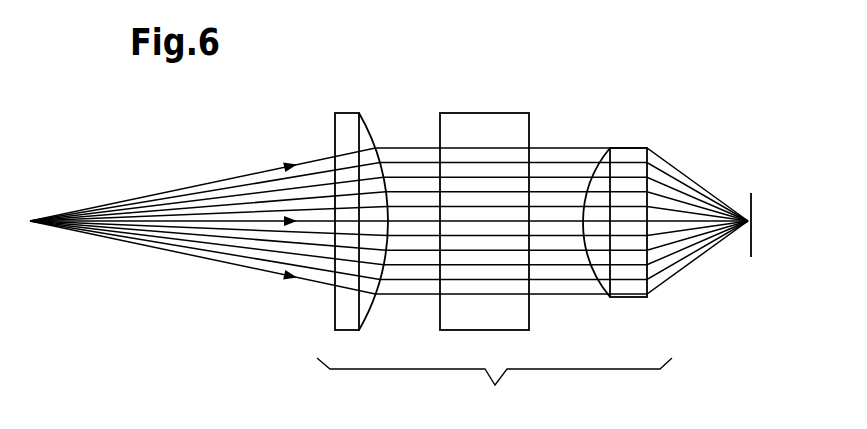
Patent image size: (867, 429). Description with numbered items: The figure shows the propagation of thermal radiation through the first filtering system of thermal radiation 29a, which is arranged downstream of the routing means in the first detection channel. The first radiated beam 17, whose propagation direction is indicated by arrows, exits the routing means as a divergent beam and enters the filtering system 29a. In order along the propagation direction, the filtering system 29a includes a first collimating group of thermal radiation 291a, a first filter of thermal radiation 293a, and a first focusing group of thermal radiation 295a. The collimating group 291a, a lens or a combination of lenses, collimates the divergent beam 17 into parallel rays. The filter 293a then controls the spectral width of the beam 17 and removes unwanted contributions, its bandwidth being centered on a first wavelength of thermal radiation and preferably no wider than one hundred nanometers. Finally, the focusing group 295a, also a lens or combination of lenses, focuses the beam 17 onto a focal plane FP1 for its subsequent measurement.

The first radiated beam 17 is at (250, 173).
The first filtering system of thermal radiation 29a is at (488, 230).
The first collimating group of thermal radiation 291a is at (348, 120).
The first filter of thermal radiation 293a is at (490, 120).
The first focusing group of thermal radiation 295a is at (626, 147).
The focal plane FP1 is at (753, 207).